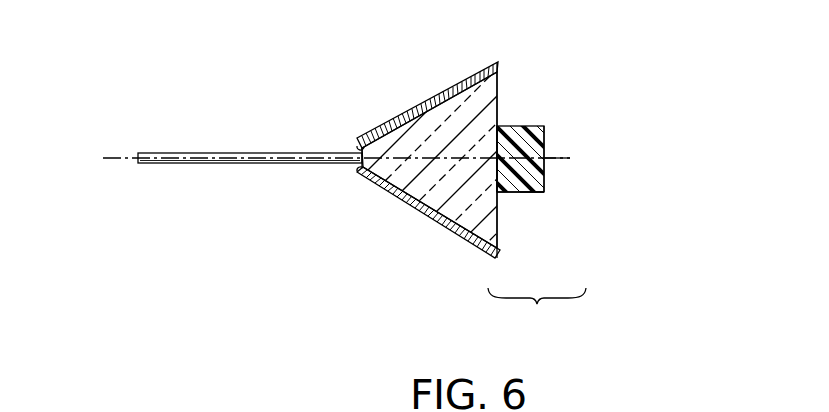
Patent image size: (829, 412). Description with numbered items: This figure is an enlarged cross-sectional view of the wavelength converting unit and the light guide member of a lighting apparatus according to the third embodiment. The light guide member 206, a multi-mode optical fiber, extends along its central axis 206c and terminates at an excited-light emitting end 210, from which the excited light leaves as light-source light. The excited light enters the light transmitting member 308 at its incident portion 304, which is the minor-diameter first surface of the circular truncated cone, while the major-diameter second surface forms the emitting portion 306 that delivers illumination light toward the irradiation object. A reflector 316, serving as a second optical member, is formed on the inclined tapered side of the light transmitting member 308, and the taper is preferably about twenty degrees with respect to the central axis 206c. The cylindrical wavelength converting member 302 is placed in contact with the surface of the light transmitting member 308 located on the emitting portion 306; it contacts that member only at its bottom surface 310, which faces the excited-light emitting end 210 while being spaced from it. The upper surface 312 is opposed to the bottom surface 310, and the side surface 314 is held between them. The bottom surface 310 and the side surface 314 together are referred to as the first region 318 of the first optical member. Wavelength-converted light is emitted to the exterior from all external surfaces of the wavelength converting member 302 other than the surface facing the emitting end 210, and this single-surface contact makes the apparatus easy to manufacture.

The light guide member 206 is at (238, 166).
The central axis 206c is at (570, 158).
The excited-light emitting end 210 is at (372, 136).
The wavelength converting member 302 is at (535, 126).
The incident portion 304 is at (360, 171).
The emitting portion 306 is at (497, 90).
The light transmitting member 308 is at (427, 123).
The bottom surface 310 is at (494, 173).
The upper surface 312 is at (546, 173).
The side surface 314 is at (531, 193).
The reflector 316 is at (465, 77).
The first region 318 is at (537, 310).